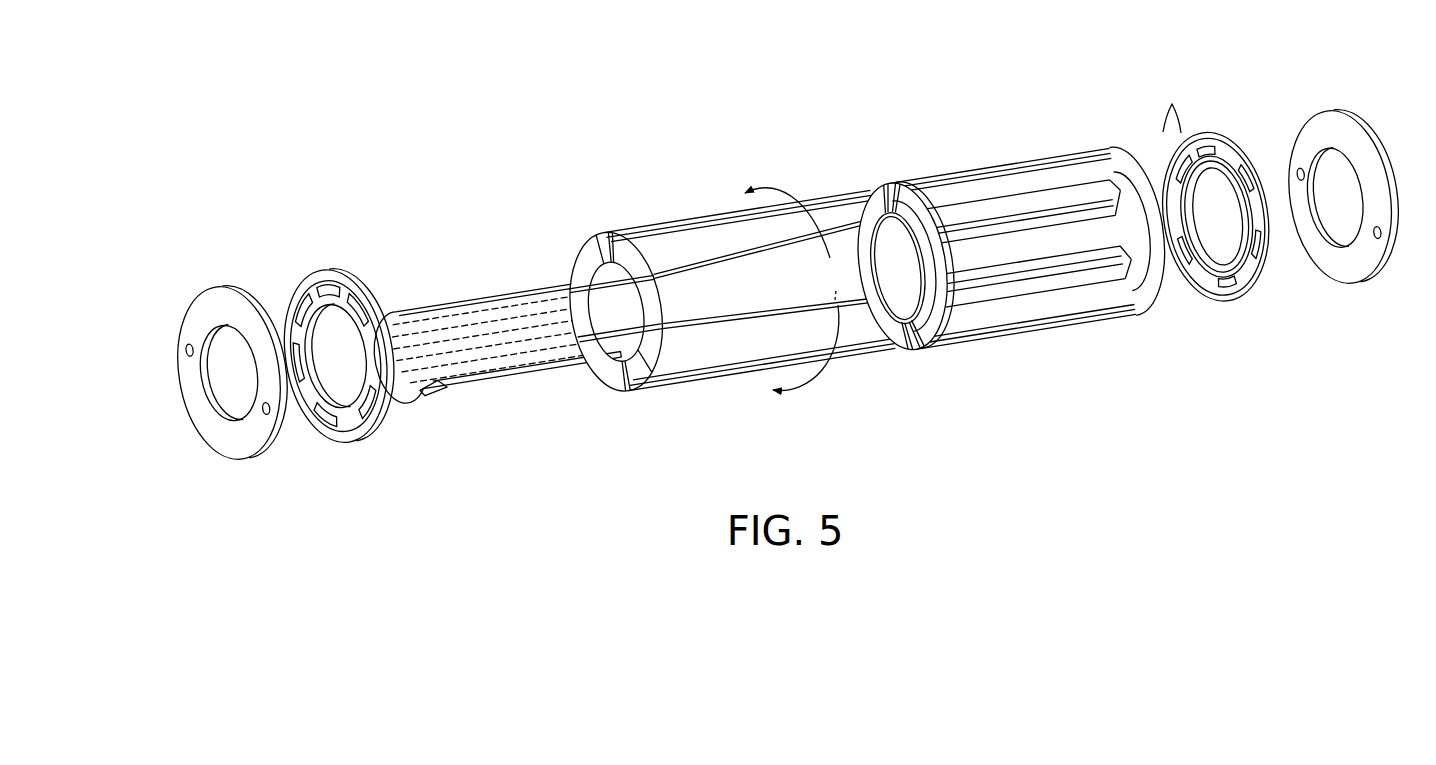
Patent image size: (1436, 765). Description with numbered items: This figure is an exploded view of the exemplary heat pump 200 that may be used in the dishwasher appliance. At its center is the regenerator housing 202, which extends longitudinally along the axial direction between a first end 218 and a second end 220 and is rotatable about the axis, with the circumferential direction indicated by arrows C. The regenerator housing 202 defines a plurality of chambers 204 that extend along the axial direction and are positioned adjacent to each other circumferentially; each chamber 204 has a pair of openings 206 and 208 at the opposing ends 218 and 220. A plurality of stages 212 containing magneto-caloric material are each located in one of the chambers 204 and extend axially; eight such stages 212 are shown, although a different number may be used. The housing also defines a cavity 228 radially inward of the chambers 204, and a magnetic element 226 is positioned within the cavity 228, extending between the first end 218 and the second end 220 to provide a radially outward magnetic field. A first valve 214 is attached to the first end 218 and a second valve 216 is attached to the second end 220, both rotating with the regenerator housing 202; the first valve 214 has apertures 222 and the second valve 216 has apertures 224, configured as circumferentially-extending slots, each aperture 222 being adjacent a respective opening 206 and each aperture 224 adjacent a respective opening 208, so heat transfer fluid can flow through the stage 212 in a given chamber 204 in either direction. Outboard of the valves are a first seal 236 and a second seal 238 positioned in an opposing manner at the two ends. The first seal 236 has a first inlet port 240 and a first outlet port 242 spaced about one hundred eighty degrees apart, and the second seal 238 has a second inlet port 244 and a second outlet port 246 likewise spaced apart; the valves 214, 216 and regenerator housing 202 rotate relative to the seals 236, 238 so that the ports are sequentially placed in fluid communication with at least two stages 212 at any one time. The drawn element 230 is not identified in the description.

The heat pump 200 is at (786, 276).
The regenerator housing 202 is at (1047, 180).
The chambers 204 is at (995, 190).
The opening 206 is at (868, 198).
The opening 208 is at (1147, 165).
The stages 212 is at (587, 267).
The first valve 214 is at (323, 272).
The second valve 216 is at (1212, 128).
The first end 218 is at (880, 178).
The second end 220 is at (1140, 327).
The apertures 222 is at (297, 300).
The apertures 224 is at (1227, 327).
The magnetic element 226 is at (427, 393).
The cavity 228 is at (910, 284).
The half tube channel 230 is at (503, 320).
The first seal 236 is at (225, 307).
The second seal 238 is at (1328, 130).
The first inlet port 240 is at (250, 425).
The first outlet port 242 is at (188, 347).
The second inlet port 244 is at (1287, 165).
The second outlet port 246 is at (1362, 248).